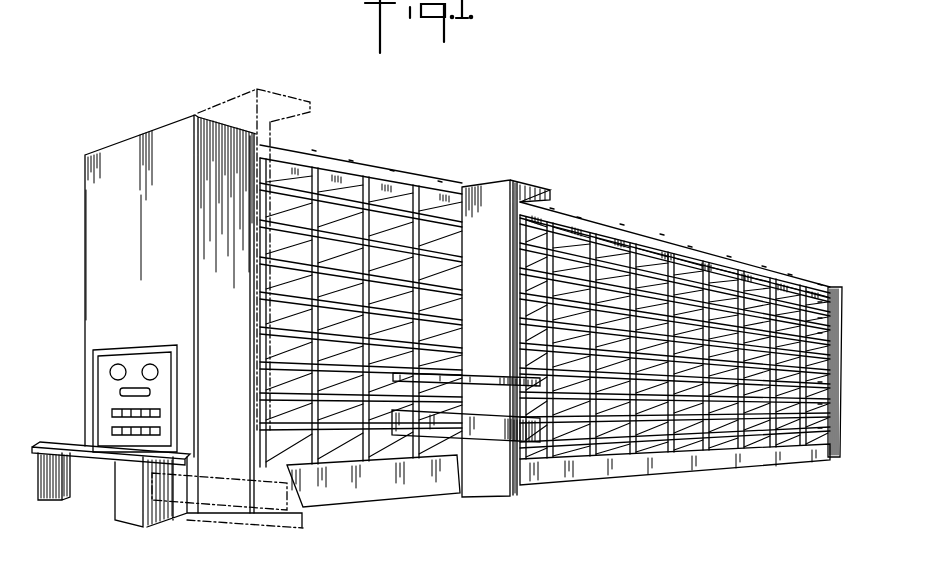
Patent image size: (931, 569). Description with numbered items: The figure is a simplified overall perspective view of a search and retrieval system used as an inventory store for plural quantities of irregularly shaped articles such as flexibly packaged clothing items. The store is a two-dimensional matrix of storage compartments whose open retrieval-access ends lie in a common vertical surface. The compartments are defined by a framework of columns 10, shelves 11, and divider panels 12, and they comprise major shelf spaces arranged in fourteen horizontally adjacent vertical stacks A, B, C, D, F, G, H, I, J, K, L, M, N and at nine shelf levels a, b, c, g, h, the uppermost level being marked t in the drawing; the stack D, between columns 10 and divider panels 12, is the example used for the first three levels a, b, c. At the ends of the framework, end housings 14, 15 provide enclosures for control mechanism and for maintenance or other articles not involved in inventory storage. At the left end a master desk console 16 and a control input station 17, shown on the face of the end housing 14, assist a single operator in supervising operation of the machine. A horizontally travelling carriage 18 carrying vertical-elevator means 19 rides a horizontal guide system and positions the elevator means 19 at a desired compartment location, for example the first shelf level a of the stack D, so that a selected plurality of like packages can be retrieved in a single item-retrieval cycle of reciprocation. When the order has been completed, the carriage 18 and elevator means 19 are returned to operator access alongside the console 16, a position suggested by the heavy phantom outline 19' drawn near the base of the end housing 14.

The columns 10 is at (333, 448).
The shelves 11 is at (604, 430).
The divider panels 12 is at (692, 398).
The end housing 14 is at (203, 120).
The end housing 15 is at (836, 452).
The master desk console 16 is at (37, 486).
The control input station 17 is at (92, 376).
The horizontally travelling carriage 18 is at (485, 186).
The vertical-elevator means 19 is at (484, 445).
The heavy phantom outline 19' is at (219, 519).
The vertical stack A is at (313, 140).
The vertical stack B is at (349, 153).
The vertical stack C is at (390, 166).
The vertical stack D is at (438, 179).
The vertical stack F is at (550, 205).
The vertical stack G is at (577, 214).
The vertical stack H is at (620, 221).
The vertical stack I is at (660, 231).
The vertical stack J is at (688, 243).
The vertical stack K is at (727, 253).
The vertical stack L is at (762, 263).
The vertical stack M is at (788, 271).
The vertical stack N is at (818, 281).
The shelf level a is at (822, 428).
The shelf level b is at (822, 404).
The shelf level c is at (822, 382).
The shelf level g is at (822, 333).
The shelf level h is at (822, 318).
The shelf row t is at (822, 302).